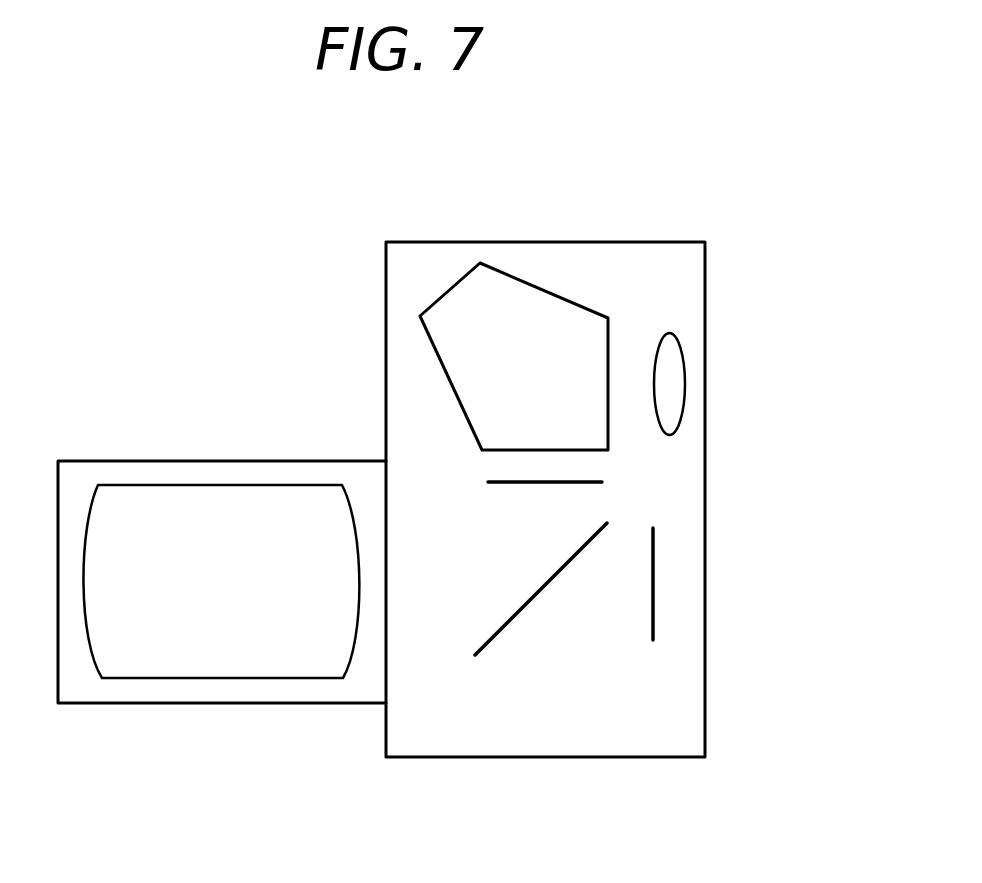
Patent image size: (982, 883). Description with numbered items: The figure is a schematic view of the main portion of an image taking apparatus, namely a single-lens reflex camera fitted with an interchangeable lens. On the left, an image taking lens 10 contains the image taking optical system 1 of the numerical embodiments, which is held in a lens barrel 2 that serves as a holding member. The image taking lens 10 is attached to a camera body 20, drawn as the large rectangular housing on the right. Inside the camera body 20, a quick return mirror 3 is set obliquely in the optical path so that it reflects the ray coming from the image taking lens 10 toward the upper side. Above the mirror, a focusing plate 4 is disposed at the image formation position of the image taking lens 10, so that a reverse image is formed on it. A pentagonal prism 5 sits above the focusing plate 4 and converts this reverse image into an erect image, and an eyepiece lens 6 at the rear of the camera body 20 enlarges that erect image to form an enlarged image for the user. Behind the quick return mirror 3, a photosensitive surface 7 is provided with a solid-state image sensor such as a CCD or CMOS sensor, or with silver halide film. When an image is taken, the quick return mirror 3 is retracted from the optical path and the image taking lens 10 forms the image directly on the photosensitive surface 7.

The image taking optical system 1 is at (173, 483).
The lens barrel 2 is at (207, 703).
The quick return mirror 3 is at (548, 585).
The focusing plate 4 is at (490, 483).
The pentagonal prism 5 is at (455, 282).
The eyepiece lens 6 is at (685, 382).
The photosensitive surface 7 is at (653, 583).
The image taking lens 10 is at (263, 427).
The camera body 20 is at (550, 222).